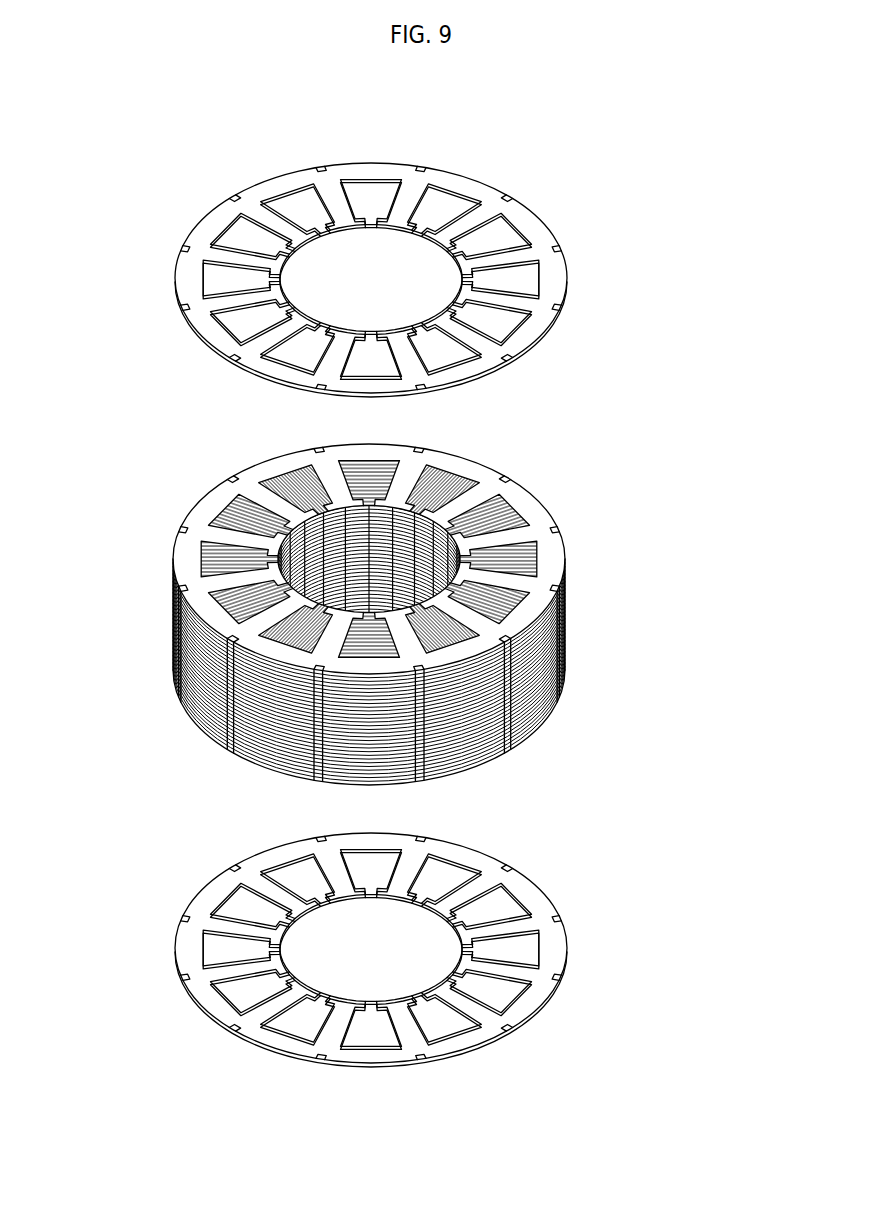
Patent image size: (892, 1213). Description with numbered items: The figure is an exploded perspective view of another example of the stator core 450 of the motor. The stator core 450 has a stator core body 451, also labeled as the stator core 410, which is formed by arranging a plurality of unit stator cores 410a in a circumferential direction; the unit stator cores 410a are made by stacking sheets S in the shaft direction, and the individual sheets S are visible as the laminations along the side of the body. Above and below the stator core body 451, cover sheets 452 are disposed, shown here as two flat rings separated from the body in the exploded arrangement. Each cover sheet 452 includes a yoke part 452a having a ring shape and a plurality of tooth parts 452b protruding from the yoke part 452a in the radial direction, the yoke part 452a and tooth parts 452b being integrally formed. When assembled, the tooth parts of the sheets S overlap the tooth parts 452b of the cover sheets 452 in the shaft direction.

The stator core 450 is at (128, 107).
The cover sheet 452 is at (396, 592).
The yoke part 452a is at (184, 282).
The tooth part 452b is at (268, 224).
The unit stator core 410a is at (505, 470).
The stator core body 451 is at (443, 584).
The stator core 410 is at (443, 584).
The sheet S is at (193, 723).